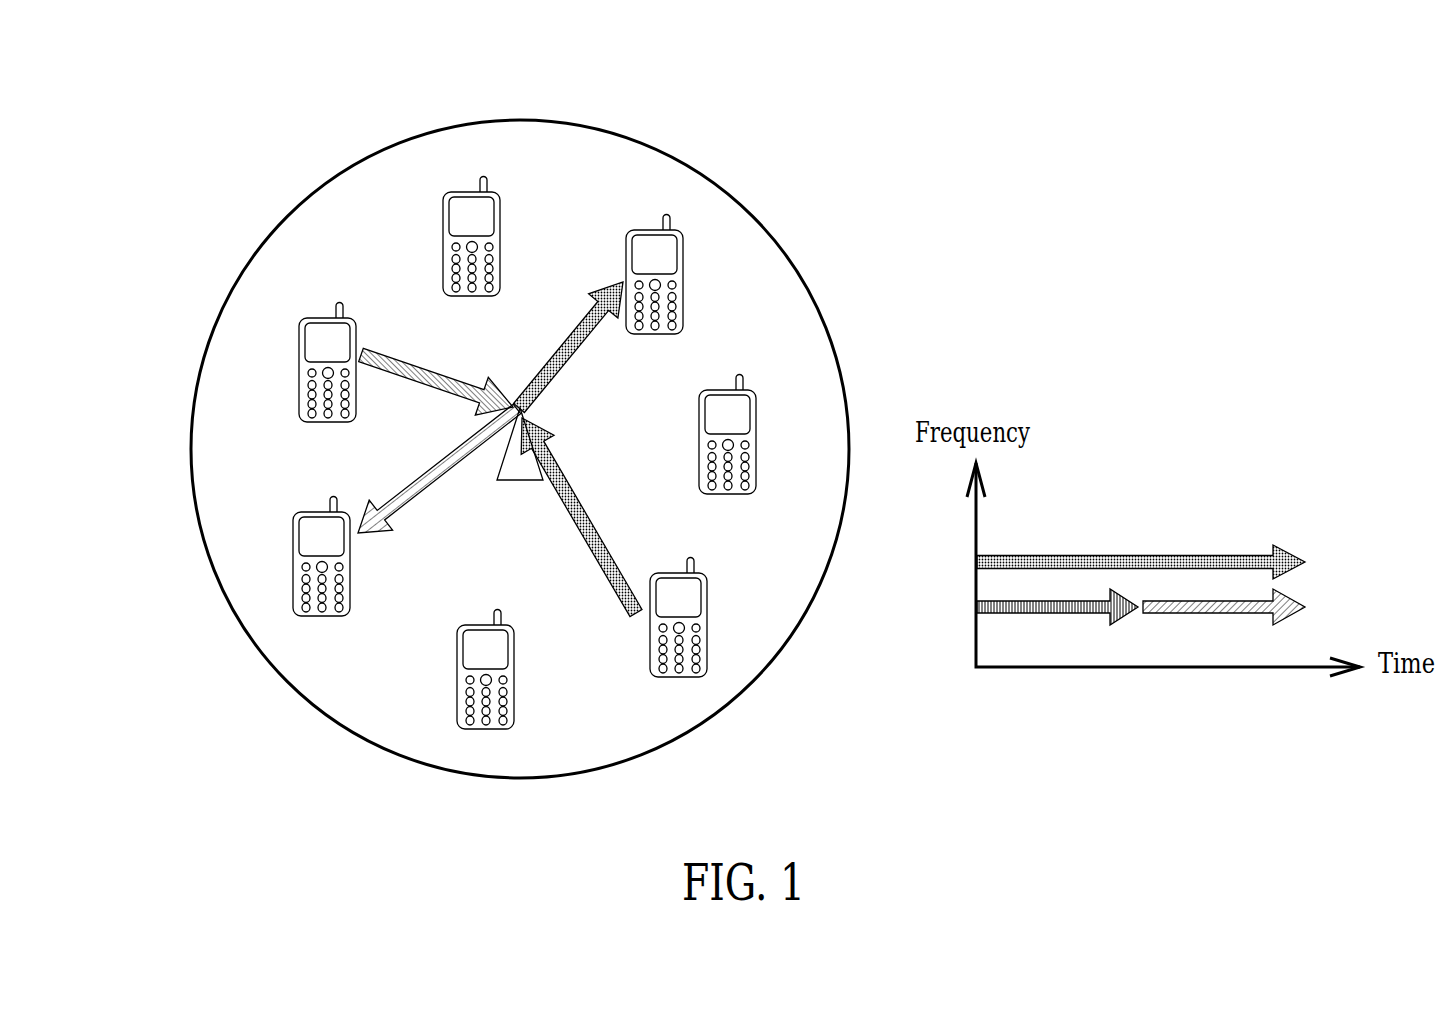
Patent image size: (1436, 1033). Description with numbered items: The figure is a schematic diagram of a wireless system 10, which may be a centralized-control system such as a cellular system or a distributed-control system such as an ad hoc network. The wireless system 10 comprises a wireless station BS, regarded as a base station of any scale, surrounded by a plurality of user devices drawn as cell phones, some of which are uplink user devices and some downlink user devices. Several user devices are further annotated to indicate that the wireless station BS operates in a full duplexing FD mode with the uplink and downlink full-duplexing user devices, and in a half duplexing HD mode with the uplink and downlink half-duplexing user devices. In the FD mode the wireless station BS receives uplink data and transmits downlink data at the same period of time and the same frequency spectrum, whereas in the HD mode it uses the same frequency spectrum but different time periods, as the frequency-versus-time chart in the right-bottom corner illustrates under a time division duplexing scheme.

The wireless system 10 is at (725, 100).
The wireless station BS is at (513, 473).
The full duplexing mode FD is at (1163, 560).
The half duplexing mode HD is at (1165, 607).